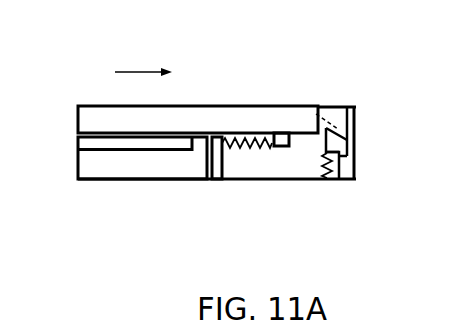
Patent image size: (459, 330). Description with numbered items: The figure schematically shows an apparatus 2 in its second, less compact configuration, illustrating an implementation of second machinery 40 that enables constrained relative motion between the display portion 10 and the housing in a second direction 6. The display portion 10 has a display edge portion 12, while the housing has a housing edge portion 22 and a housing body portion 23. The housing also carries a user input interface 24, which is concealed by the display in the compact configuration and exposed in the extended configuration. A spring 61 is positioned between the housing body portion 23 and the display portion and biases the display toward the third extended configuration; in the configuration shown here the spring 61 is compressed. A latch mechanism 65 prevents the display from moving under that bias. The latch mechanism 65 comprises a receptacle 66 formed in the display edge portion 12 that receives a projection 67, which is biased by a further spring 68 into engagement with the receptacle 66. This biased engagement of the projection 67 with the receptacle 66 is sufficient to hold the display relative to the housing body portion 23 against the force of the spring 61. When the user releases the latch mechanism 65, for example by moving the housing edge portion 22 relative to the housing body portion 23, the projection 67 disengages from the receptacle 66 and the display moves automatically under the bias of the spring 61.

The apparatus 2 is at (57, 124).
The second direction 6 is at (137, 70).
The display portion 10 is at (268, 112).
The display edge portion 12 is at (344, 106).
The housing edge portion 22 is at (357, 109).
The housing body portion 23 is at (223, 170).
The user input interface 24 is at (110, 149).
The second machinery 40 is at (243, 199).
The spring 61 is at (246, 135).
The latch mechanism 65 is at (311, 151).
The receptacle 66 is at (316, 114).
The projection 67 is at (334, 141).
The spring 68 is at (328, 180).